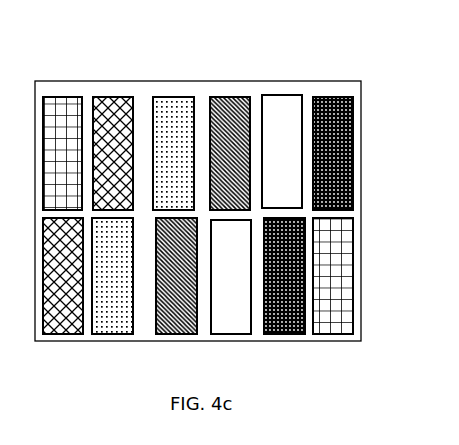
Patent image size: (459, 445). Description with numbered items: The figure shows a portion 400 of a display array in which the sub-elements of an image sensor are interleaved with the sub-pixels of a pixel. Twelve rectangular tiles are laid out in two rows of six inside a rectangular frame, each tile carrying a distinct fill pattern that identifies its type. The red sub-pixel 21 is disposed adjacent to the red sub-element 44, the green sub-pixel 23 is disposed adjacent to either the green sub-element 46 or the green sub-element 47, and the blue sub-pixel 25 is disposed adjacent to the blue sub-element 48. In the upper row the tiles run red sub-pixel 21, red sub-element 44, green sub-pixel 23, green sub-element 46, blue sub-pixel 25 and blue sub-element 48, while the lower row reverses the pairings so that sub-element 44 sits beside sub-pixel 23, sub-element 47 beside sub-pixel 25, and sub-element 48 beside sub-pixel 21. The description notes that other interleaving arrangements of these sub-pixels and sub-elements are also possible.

The portion of array 400 is at (205, 57).
The red sub-pixel 21 is at (50, 155).
The red sub-element 44 is at (100, 155).
The green sub-pixel 23 is at (160, 155).
The green sub-element 46 is at (217, 155).
The green sub-element 47 is at (163, 279).
The blue sub-pixel 25 is at (269, 155).
The blue sub-element 48 is at (320, 155).